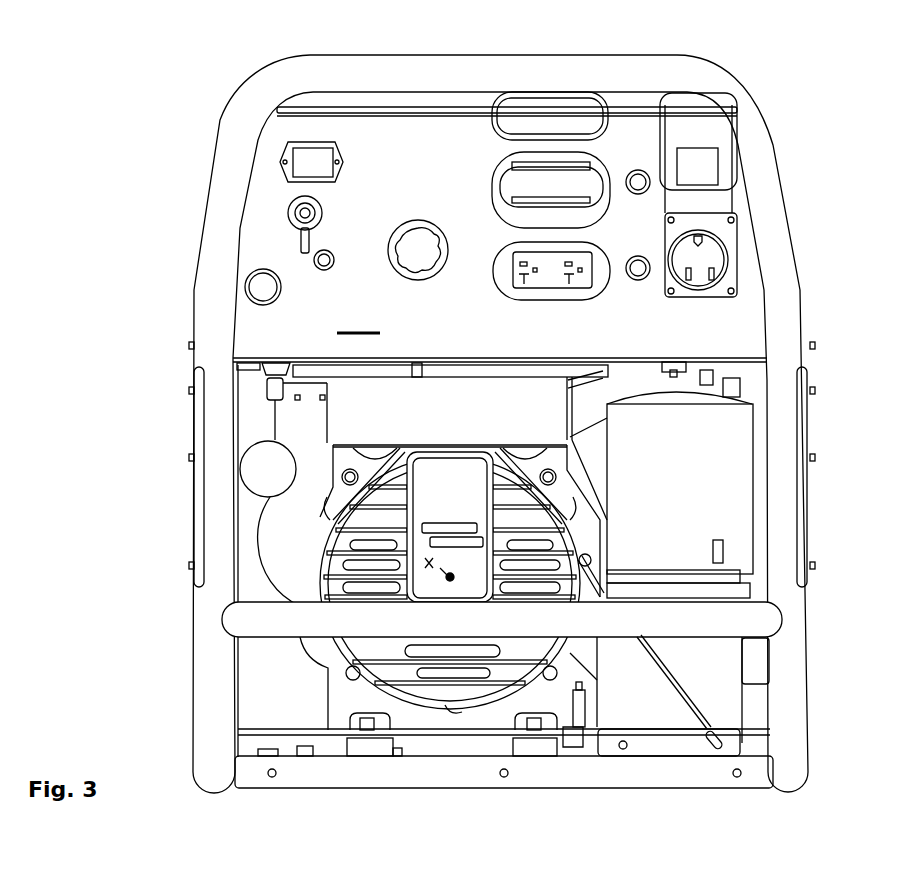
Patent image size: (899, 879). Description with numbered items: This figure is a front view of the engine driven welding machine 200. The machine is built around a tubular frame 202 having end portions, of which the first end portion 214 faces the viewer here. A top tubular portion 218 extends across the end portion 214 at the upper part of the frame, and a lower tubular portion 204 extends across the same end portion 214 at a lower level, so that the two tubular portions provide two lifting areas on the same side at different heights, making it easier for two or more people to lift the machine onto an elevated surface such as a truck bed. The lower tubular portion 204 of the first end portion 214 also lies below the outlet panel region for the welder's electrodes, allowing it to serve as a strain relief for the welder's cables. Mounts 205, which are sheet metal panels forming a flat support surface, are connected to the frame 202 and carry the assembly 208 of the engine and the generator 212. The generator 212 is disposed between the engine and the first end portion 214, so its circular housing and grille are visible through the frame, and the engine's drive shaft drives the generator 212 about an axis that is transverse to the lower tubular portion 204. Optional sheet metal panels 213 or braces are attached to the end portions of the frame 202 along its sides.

The engine driven welding machine 200 is at (815, 86).
The frame 202 is at (806, 258).
The lower tubular portion 204 is at (628, 615).
The mount 205 is at (557, 775).
The assembly of engine and generator 208 is at (400, 158).
The generator 212 is at (343, 545).
The panel 213 is at (196, 436).
The first end portion 214 is at (220, 118).
The top tubular portion 218 is at (468, 57).